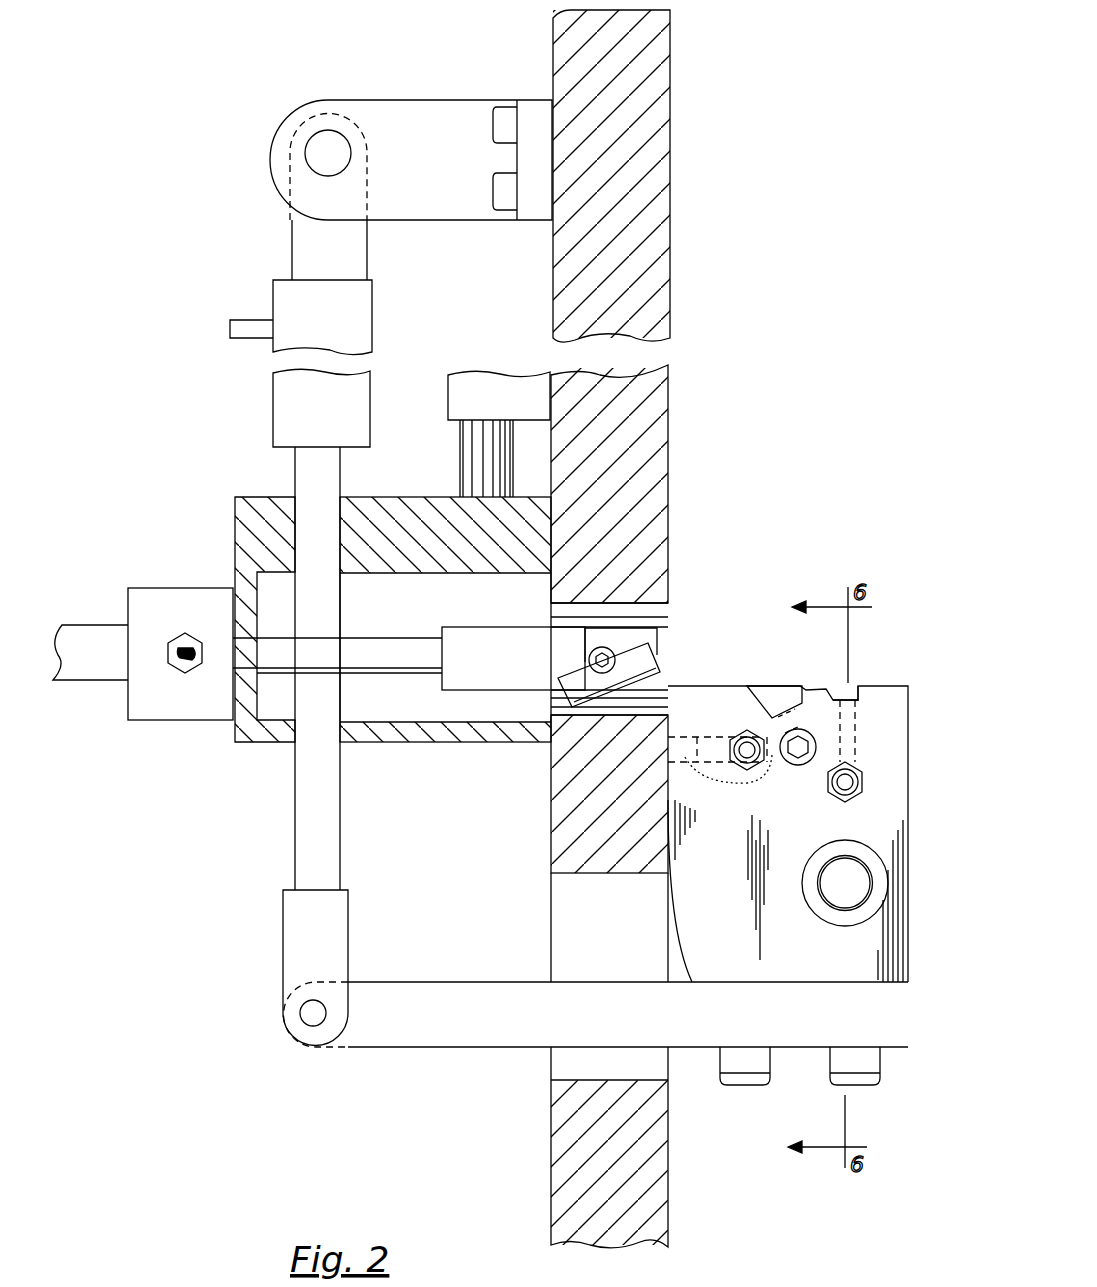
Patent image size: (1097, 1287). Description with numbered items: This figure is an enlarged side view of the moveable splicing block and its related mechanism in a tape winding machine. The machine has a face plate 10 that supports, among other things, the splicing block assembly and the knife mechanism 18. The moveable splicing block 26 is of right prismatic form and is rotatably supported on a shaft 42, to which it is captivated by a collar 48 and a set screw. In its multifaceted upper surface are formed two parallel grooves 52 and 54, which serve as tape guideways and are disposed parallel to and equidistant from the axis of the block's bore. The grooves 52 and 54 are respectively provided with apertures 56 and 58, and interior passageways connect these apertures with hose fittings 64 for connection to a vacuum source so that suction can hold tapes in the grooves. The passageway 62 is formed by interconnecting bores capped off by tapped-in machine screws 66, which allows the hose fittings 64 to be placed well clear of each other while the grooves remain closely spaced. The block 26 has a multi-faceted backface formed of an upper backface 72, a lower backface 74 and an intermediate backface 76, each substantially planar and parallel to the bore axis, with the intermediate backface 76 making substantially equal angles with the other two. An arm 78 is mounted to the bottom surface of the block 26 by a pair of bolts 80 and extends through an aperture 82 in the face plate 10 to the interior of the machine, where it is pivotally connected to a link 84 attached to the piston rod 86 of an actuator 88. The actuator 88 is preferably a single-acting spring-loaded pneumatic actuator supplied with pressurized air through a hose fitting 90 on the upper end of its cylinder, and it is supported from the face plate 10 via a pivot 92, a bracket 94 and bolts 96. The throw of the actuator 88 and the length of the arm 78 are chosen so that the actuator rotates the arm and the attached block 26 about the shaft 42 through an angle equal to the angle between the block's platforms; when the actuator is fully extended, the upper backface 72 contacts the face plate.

The face plate 10 is at (668, 262).
The knife mechanism 18 is at (665, 644).
The moveable splicing block 26 is at (919, 800).
The shaft 42 is at (862, 870).
The collar 48 is at (880, 895).
The groove 52 is at (858, 690).
The groove 54 is at (768, 700).
The apertures 56 is at (853, 725).
The apertures 58 is at (799, 713).
The interior passageway 62 is at (728, 778).
The hose fittings 64 is at (745, 729).
The machine screws 66 is at (687, 757).
The upper backface 72 is at (666, 828).
The lower backface 74 is at (690, 968).
The intermediate backface 76 is at (671, 910).
The arm 78 is at (900, 1008).
The bolts 80 is at (830, 1078).
The aperture 82 is at (568, 1082).
The link 84 is at (318, 1008).
The piston rod 86 is at (298, 467).
The actuator 88 is at (276, 400).
The hose fitting 90 is at (248, 320).
The pivot 92 is at (321, 140).
The bracket 94 is at (417, 100).
The bolts 96 is at (509, 108).